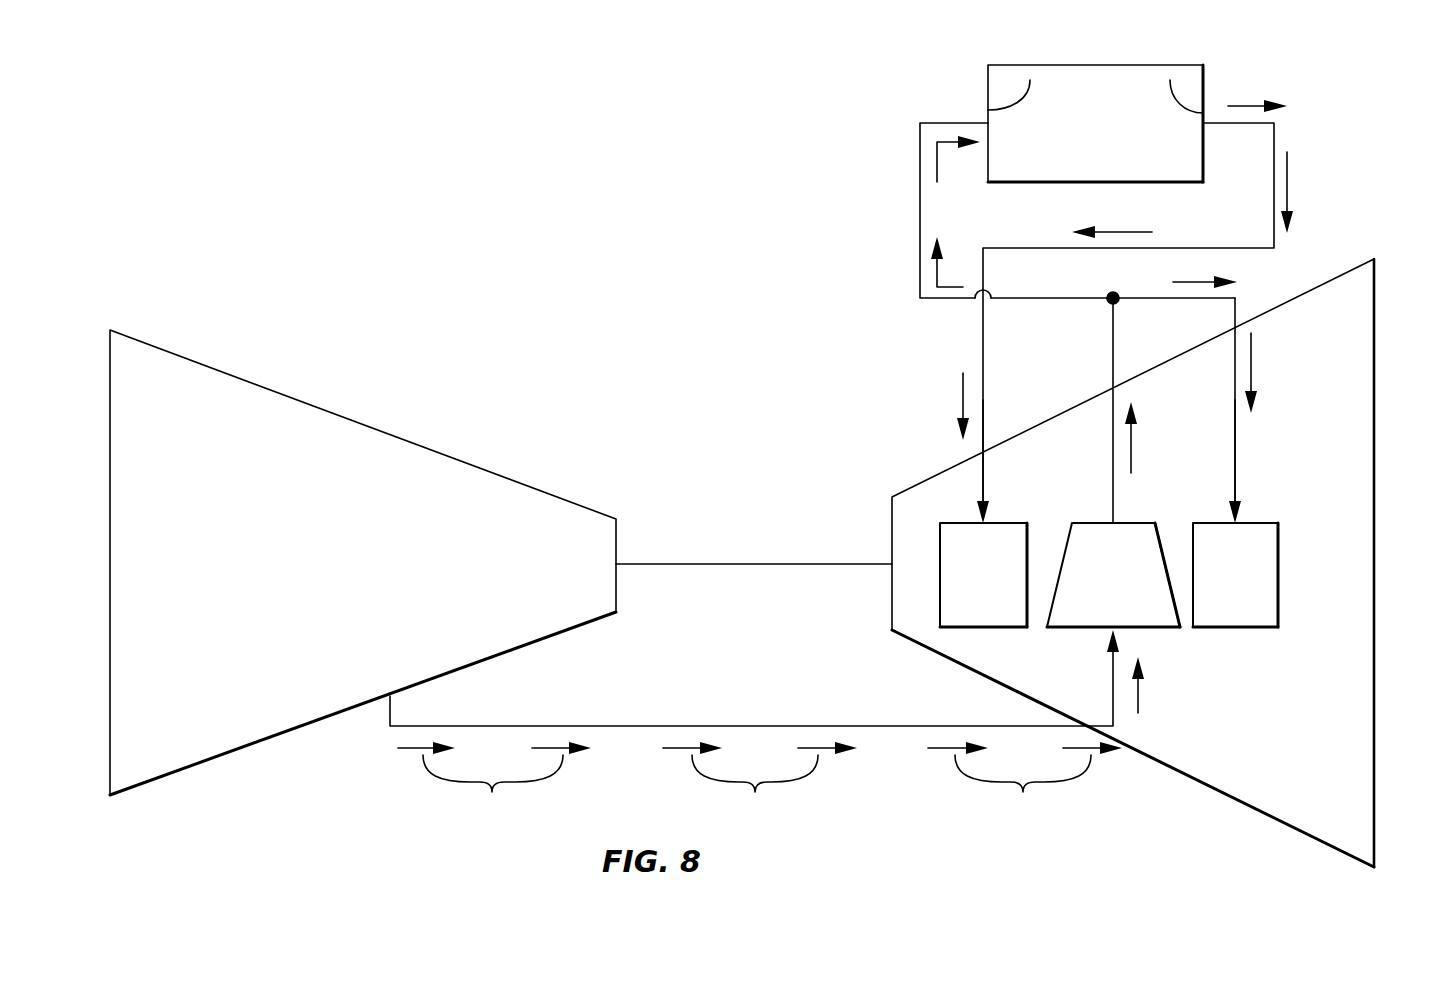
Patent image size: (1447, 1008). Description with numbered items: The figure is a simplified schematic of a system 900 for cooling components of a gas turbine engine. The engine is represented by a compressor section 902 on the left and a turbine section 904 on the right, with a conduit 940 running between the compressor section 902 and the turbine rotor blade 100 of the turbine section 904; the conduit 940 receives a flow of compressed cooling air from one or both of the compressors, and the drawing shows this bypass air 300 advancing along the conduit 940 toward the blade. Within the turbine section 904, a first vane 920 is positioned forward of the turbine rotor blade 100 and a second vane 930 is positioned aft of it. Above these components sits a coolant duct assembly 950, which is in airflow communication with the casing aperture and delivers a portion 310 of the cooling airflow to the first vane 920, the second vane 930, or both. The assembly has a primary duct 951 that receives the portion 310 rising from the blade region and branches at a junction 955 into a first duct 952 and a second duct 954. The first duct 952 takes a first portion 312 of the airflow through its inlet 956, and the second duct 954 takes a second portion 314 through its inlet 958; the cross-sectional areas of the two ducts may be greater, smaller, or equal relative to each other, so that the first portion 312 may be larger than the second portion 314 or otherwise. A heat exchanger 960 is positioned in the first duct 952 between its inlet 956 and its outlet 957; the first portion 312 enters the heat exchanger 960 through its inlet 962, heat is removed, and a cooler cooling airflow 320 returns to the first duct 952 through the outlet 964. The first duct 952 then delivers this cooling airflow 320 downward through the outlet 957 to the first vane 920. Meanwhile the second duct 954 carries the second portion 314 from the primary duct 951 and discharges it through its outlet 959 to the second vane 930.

The system for cooling components of a gas turbine engine 900 is at (873, 835).
The compressor section 902 is at (300, 584).
The turbine section 904 is at (1245, 744).
The conduit 940 is at (760, 726).
The first vane 920 is at (963, 592).
The turbine rotor blade 100 is at (1093, 592).
The second vane 930 is at (1215, 592).
The heat exchanger 960 is at (1075, 136).
The inlet of heat exchanger 962 is at (1030, 80).
The outlet of heat exchanger 964 is at (1170, 80).
The coolant duct assembly 950 is at (1360, 160).
The first duct 952 is at (920, 153).
The second duct 954 is at (1233, 312).
The junction 955 is at (1108, 303).
The inlet of first duct 956 is at (1043, 298).
The outlet of first duct 957 is at (980, 490).
The inlet of second duct 958 is at (1148, 298).
The outlet of second duct 959 is at (1240, 485).
The primary duct 951 is at (1115, 508).
The first portion of cooling airflow 312 is at (930, 165).
The second portion of cooling airflow 314 is at (1197, 280).
The cooling airflow exiting heat exchanger 320 is at (1290, 170).
The portion of cooling airflow 310 is at (1133, 455).
The bypass air flow 300 is at (1190, 672).